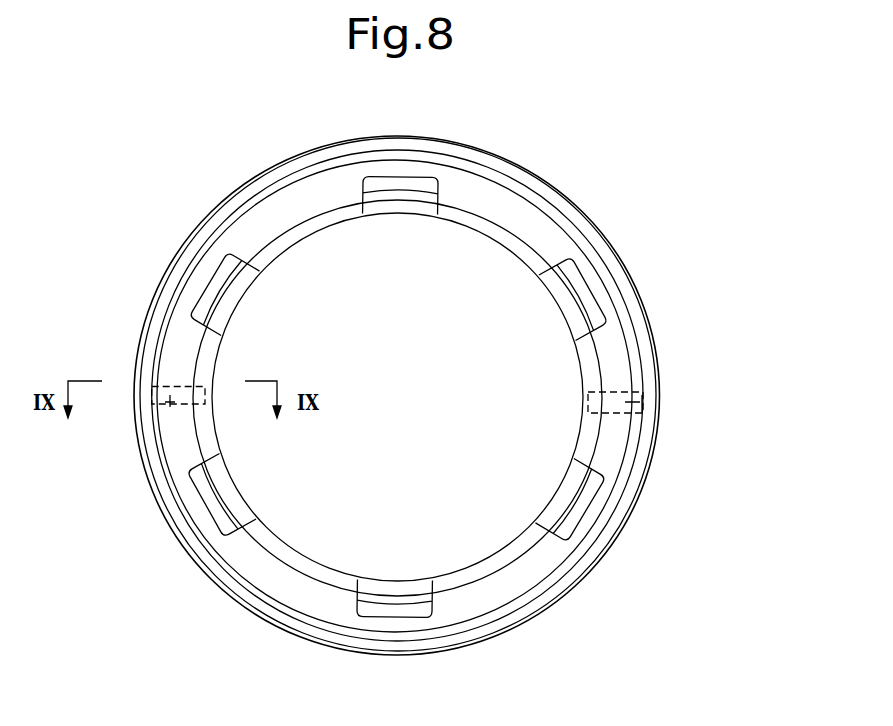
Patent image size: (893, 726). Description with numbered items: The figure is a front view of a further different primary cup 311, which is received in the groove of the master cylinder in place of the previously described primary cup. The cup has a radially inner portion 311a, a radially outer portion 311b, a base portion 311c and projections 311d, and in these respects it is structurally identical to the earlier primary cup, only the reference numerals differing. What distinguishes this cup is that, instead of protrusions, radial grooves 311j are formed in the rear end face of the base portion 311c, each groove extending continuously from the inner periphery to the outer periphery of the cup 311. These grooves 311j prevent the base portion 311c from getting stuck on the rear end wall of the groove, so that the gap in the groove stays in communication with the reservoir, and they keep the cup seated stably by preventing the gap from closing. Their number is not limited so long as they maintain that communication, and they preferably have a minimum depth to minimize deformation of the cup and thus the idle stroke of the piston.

The primary cup 311 is at (500, 156).
The radially inner portion 311a is at (470, 218).
The radially outer portion 311b is at (568, 220).
The base portion 311c is at (608, 450).
The projections 311d is at (585, 290).
The radial grooves 311j is at (167, 417).